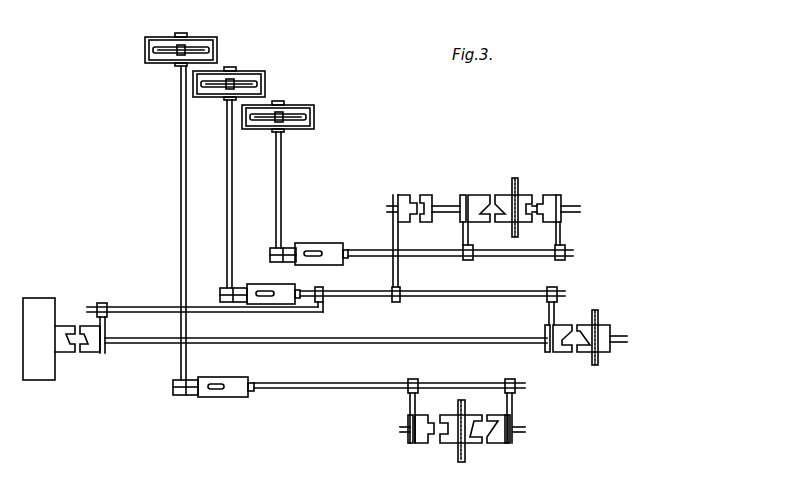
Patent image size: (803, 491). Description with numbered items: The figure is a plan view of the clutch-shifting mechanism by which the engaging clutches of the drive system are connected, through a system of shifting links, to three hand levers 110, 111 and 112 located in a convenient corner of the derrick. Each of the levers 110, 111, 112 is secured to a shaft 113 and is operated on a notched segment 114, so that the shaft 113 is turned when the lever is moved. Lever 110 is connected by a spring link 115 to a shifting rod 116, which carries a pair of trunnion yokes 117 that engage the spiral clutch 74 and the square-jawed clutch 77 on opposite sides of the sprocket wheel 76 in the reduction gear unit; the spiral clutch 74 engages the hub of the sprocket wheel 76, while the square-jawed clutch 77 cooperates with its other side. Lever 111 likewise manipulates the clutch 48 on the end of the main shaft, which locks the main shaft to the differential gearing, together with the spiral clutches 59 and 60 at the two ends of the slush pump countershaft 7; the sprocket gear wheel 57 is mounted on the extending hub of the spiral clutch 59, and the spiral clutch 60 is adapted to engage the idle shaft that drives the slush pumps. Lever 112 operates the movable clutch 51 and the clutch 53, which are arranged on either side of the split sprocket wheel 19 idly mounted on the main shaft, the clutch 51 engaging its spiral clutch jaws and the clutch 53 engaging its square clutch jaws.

The slush pump countershaft 7 is at (325, 344).
The split sprocket wheel 19 is at (518, 182).
The clutch 48 is at (402, 194).
The movable clutch 51 is at (482, 194).
The clutch 53 is at (553, 194).
The sprocket gear wheel 57 is at (599, 322).
The spiral clutch 59 is at (560, 353).
The spiral clutch 60 is at (95, 354).
The spiral clutch 74 is at (500, 444).
The sprocket wheel 76 is at (462, 463).
The square-jawed clutch 77 is at (425, 444).
The lever 110 is at (187, 46).
The lever 111 is at (241, 78).
The lever 112 is at (284, 112).
The shaft 113 is at (180, 200).
The notched segment 114 is at (160, 59).
The spring link 115 is at (318, 243).
The shifting rod 116 is at (413, 255).
The trunnion yoke 117 is at (410, 400).